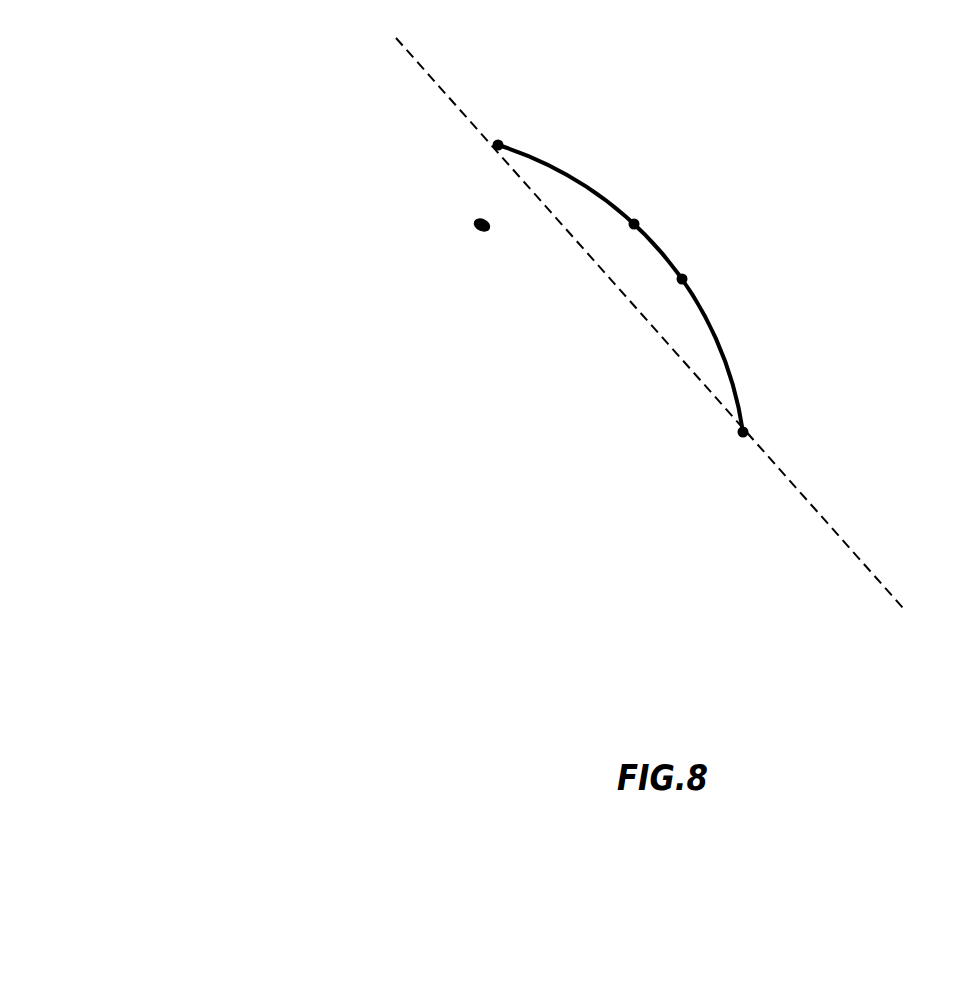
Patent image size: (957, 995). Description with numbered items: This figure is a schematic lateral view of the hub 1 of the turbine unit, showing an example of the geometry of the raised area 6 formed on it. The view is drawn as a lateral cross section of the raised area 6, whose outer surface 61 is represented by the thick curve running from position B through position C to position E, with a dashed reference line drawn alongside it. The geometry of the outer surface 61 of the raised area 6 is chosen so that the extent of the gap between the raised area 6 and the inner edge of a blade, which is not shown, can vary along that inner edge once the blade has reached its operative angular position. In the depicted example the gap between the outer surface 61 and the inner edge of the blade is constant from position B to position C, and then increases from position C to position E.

The hub 1 is at (474, 221).
The raised area 6 is at (766, 385).
The outer surface 61 is at (635, 223).